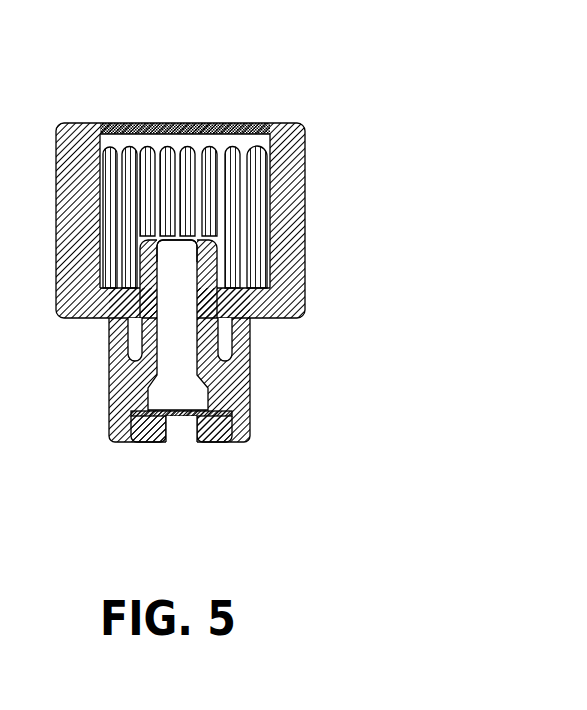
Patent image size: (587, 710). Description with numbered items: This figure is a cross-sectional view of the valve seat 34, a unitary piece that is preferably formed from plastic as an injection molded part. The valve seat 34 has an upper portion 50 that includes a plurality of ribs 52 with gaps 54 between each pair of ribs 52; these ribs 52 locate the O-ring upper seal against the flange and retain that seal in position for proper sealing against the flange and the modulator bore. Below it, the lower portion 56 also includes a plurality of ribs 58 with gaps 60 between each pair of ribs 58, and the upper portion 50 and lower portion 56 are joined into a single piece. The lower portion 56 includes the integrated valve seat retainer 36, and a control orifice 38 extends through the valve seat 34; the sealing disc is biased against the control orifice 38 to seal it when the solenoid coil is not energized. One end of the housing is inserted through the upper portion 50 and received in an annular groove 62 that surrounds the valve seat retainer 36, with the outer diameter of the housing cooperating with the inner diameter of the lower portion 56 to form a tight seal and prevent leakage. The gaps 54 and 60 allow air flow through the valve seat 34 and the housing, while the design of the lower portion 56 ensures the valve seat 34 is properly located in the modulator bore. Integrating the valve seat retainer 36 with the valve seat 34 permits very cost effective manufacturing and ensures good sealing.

The valve seat 34 is at (305, 192).
The valve seat retainer 36 is at (215, 303).
The control orifice 38 is at (170, 253).
The upper portion 50 is at (303, 147).
The ribs 52 is at (115, 180).
The gaps 54 is at (184, 170).
The lower portion 56 is at (250, 367).
The ribs 58 is at (205, 440).
The gaps 60 is at (184, 421).
The annular groove 62 is at (128, 329).